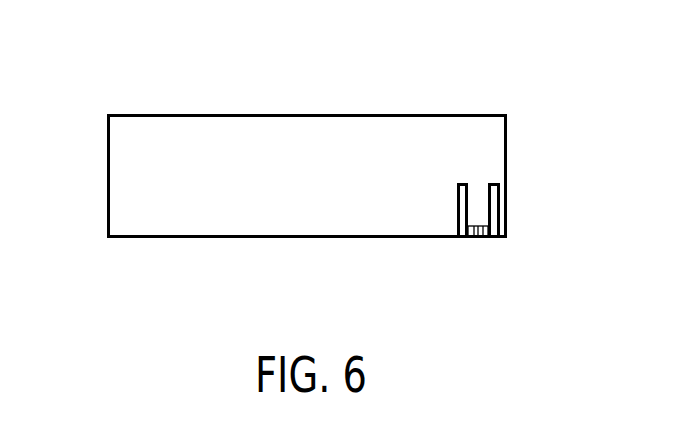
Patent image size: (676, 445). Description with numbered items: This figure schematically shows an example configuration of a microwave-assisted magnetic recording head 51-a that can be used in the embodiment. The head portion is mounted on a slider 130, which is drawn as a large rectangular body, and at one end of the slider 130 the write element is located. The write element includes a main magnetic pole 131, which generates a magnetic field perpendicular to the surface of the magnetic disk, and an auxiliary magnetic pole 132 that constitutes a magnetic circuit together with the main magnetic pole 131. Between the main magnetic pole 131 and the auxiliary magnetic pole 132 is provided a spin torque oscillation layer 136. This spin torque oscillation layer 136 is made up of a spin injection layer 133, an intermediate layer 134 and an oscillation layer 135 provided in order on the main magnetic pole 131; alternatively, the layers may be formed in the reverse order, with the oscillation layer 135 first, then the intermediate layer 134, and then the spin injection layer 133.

The microwave-assisted magnetic recording head 51-a is at (385, 82).
The slider 130 is at (107, 172).
The main magnetic pole 131 is at (500, 206).
The auxiliary magnetic pole 132 is at (457, 204).
The spin injection layer 133 is at (485, 234).
The intermediate layer 134 is at (478, 234).
The oscillation layer 135 is at (471, 234).
The spin torque oscillation layer 136 is at (537, 316).